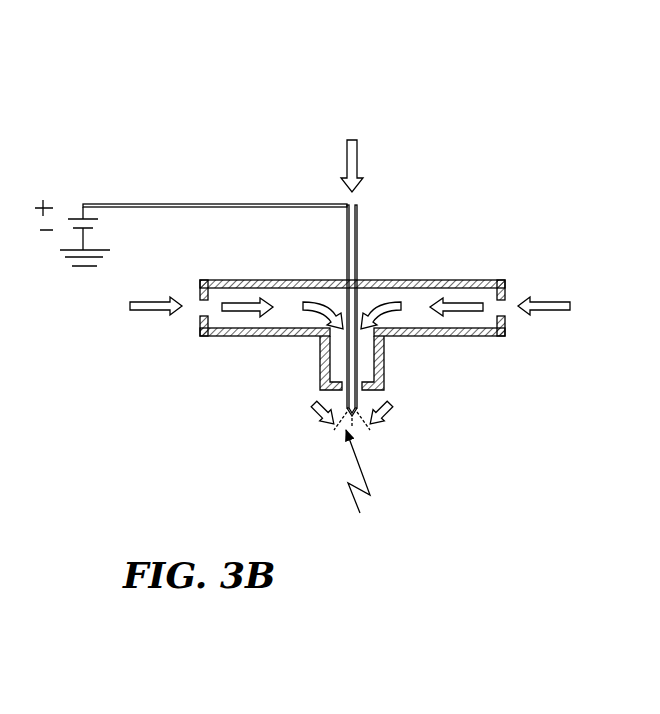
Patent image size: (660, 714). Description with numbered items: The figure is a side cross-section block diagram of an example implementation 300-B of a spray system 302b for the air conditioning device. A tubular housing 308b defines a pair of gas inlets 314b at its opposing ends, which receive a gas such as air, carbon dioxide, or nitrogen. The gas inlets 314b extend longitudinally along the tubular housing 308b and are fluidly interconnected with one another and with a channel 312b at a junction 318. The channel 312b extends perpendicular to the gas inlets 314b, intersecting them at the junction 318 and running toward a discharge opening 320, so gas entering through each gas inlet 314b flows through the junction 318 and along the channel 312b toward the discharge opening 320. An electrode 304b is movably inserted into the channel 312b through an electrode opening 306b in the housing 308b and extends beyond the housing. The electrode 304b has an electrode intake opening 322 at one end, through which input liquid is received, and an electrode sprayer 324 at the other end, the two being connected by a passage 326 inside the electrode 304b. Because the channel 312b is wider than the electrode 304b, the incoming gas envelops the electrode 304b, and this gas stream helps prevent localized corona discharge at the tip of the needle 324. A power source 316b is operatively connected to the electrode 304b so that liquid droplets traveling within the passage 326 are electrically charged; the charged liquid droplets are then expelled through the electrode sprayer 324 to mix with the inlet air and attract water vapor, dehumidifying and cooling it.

The electrospray nebulizer 300-B is at (497, 118).
The spray system 302b is at (158, 99).
The power source 316b is at (82, 217).
The electrode intake opening 322 is at (340, 194).
The electrode 304b is at (357, 212).
The passage 326 is at (357, 247).
The electrode opening 306b is at (338, 268).
The tubular housing 308b is at (450, 332).
The gas inlets 314b is at (236, 318).
The junction 318 is at (366, 304).
The channel 312b is at (341, 355).
The discharge opening 320 is at (334, 431).
The electrode sprayer 324 is at (362, 430).